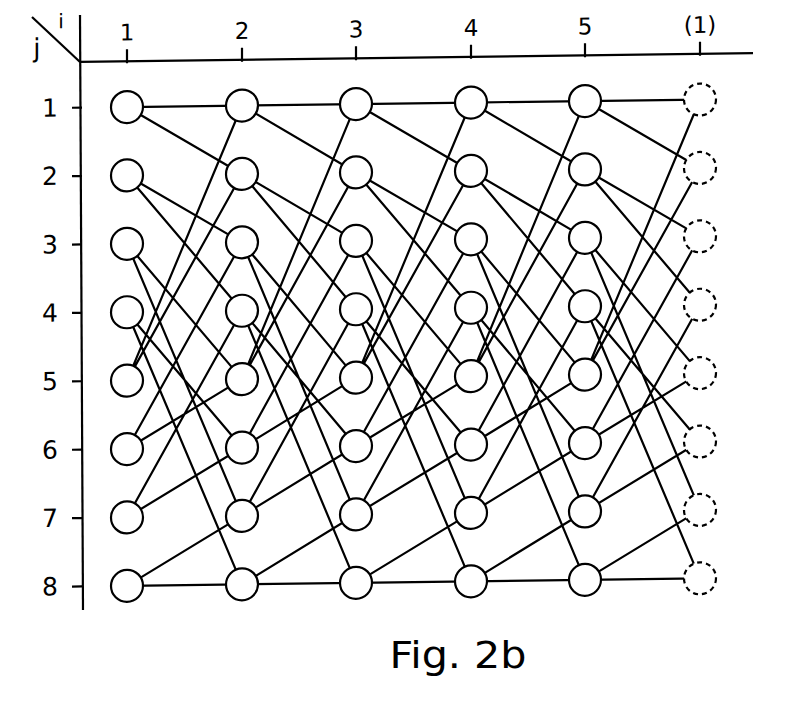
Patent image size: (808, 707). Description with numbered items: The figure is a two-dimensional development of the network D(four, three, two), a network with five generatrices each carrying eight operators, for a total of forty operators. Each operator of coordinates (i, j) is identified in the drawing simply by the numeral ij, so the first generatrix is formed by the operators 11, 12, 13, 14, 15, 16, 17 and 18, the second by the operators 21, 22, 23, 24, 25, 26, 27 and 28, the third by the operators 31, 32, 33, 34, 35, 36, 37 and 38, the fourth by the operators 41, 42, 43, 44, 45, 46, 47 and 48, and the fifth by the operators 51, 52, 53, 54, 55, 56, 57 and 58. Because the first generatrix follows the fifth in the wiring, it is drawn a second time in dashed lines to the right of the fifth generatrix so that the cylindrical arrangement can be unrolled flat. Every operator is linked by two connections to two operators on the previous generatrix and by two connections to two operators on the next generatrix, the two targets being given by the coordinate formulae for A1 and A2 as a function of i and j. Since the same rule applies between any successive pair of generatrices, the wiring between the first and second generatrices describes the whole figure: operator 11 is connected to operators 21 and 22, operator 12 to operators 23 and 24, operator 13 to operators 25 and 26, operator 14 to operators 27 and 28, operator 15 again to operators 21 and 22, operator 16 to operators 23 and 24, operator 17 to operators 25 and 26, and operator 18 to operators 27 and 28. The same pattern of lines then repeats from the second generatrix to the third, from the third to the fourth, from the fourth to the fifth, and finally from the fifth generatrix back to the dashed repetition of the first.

The operator 11 is at (413, 103).
The operator 12 is at (413, 172).
The operator 13 is at (413, 240).
The operator 14 is at (413, 309).
The operator 15 is at (413, 377).
The operator 16 is at (413, 445).
The operator 17 is at (413, 514).
The operator 18 is at (413, 582).
The operator 21 is at (242, 105).
The operator 22 is at (242, 174).
The operator 23 is at (242, 242).
The operator 24 is at (242, 311).
The operator 25 is at (242, 379).
The operator 26 is at (242, 447).
The operator 27 is at (242, 516).
The operator 28 is at (242, 584).
The operator 31 is at (356, 104).
The operator 32 is at (356, 172).
The operator 33 is at (356, 241).
The operator 34 is at (356, 309).
The operator 35 is at (356, 377).
The operator 36 is at (356, 446).
The operator 37 is at (356, 514).
The operator 38 is at (356, 583).
The operator 41 is at (471, 102).
The operator 42 is at (471, 171).
The operator 43 is at (471, 239).
The operator 44 is at (471, 308).
The operator 45 is at (471, 376).
The operator 46 is at (471, 444).
The operator 47 is at (471, 513).
The operator 48 is at (471, 581).
The operator 51 is at (585, 101).
The operator 52 is at (585, 169).
The operator 53 is at (585, 238).
The operator 54 is at (585, 306).
The operator 55 is at (585, 374).
The operator 56 is at (585, 443).
The operator 57 is at (585, 511).
The operator 58 is at (585, 580).